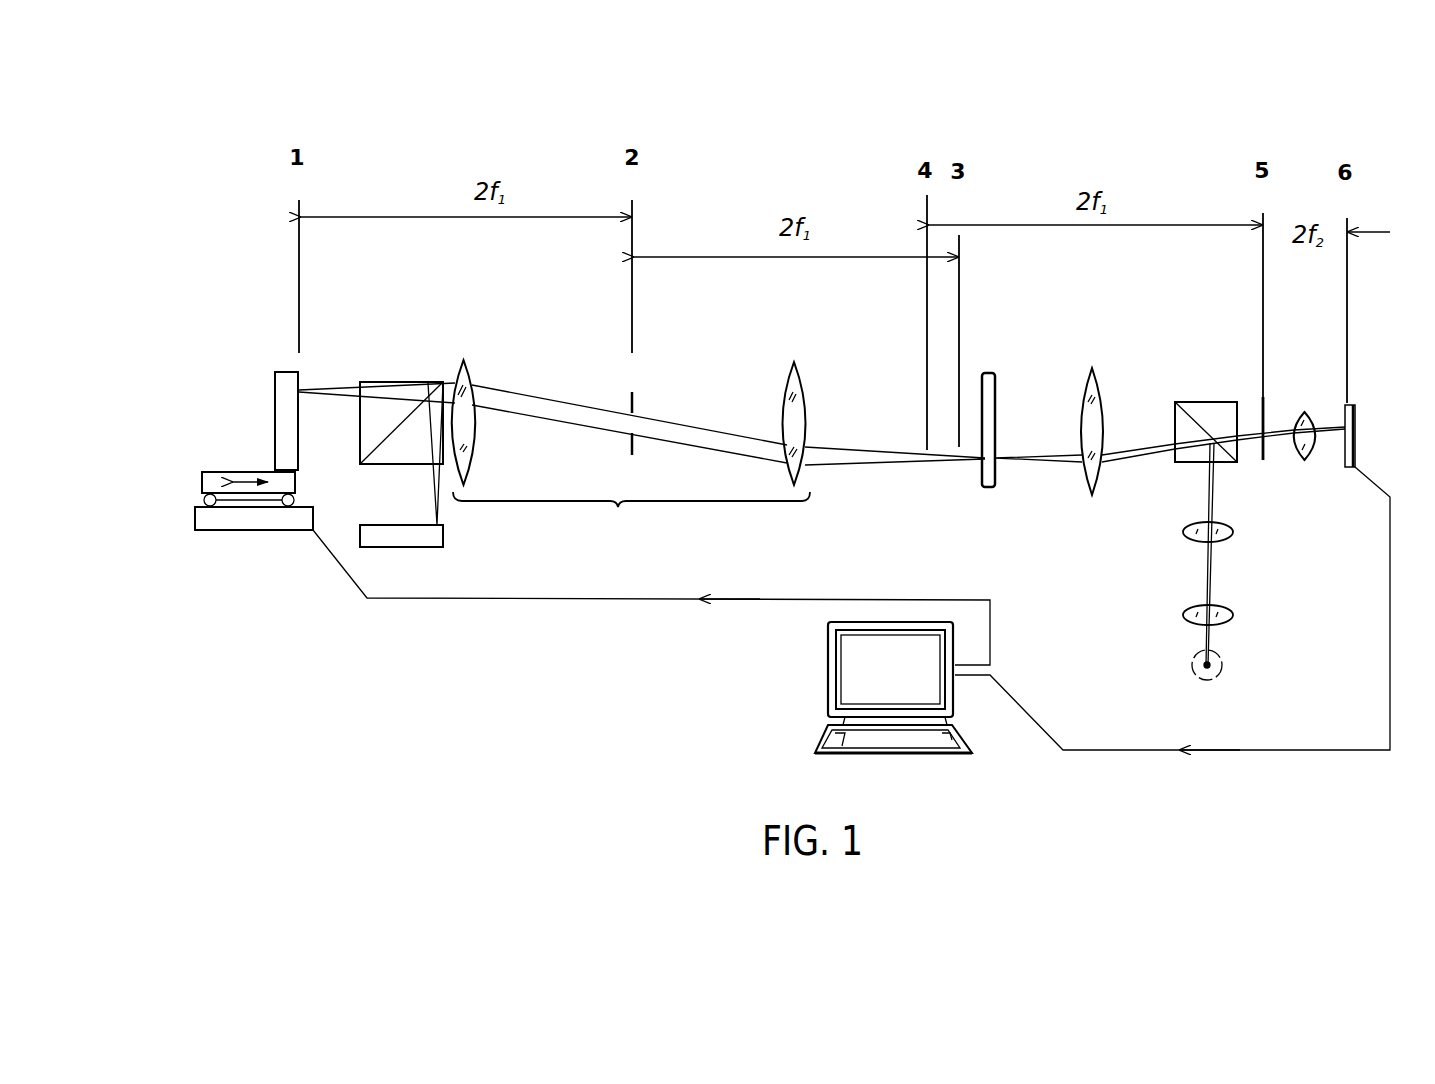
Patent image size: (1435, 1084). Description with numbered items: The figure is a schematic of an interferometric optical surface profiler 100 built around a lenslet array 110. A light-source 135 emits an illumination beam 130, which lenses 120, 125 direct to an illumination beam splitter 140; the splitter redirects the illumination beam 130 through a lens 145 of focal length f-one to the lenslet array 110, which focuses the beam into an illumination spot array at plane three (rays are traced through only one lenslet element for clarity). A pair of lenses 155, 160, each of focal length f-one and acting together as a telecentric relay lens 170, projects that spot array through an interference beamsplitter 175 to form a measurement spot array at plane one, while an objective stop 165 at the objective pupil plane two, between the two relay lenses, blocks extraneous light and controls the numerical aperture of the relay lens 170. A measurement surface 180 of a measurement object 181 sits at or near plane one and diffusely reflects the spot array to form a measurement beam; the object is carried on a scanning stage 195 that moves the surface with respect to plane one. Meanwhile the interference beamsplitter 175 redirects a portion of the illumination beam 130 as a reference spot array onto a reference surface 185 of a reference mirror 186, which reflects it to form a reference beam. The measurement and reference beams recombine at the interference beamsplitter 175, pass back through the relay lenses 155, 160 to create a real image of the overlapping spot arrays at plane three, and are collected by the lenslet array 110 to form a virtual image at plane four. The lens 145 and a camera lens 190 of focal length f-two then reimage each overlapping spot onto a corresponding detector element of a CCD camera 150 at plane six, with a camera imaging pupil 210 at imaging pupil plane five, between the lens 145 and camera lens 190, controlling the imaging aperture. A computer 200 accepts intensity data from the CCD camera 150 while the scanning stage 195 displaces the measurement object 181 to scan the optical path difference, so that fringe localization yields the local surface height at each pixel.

The interferometric optical surface profiler 100 is at (445, 670).
The lenslet array 110 is at (997, 390).
The lens 120 is at (1235, 615).
The lens 125 is at (1235, 532).
The illumination beam 130 is at (1210, 490).
The light-source 135 is at (1226, 666).
The illumination beam splitter 140 is at (1210, 403).
The lens 145 is at (1095, 392).
The CCD camera 150 is at (1357, 413).
The lens 155 is at (470, 378).
The lens 160 is at (797, 382).
The objective stop 165 is at (637, 403).
The telecentric relay lens 170 is at (618, 507).
The interference beamsplitter 175 is at (386, 452).
The measurement surface 180 is at (300, 412).
The measurement object 181 is at (280, 424).
The reference surface 185 is at (366, 525).
The reference mirror 186 is at (404, 537).
The camera lens 190 is at (1305, 462).
The scanning stage 195 is at (210, 486).
The computer 200 is at (893, 687).
The camera imaging pupil 210 is at (1265, 412).